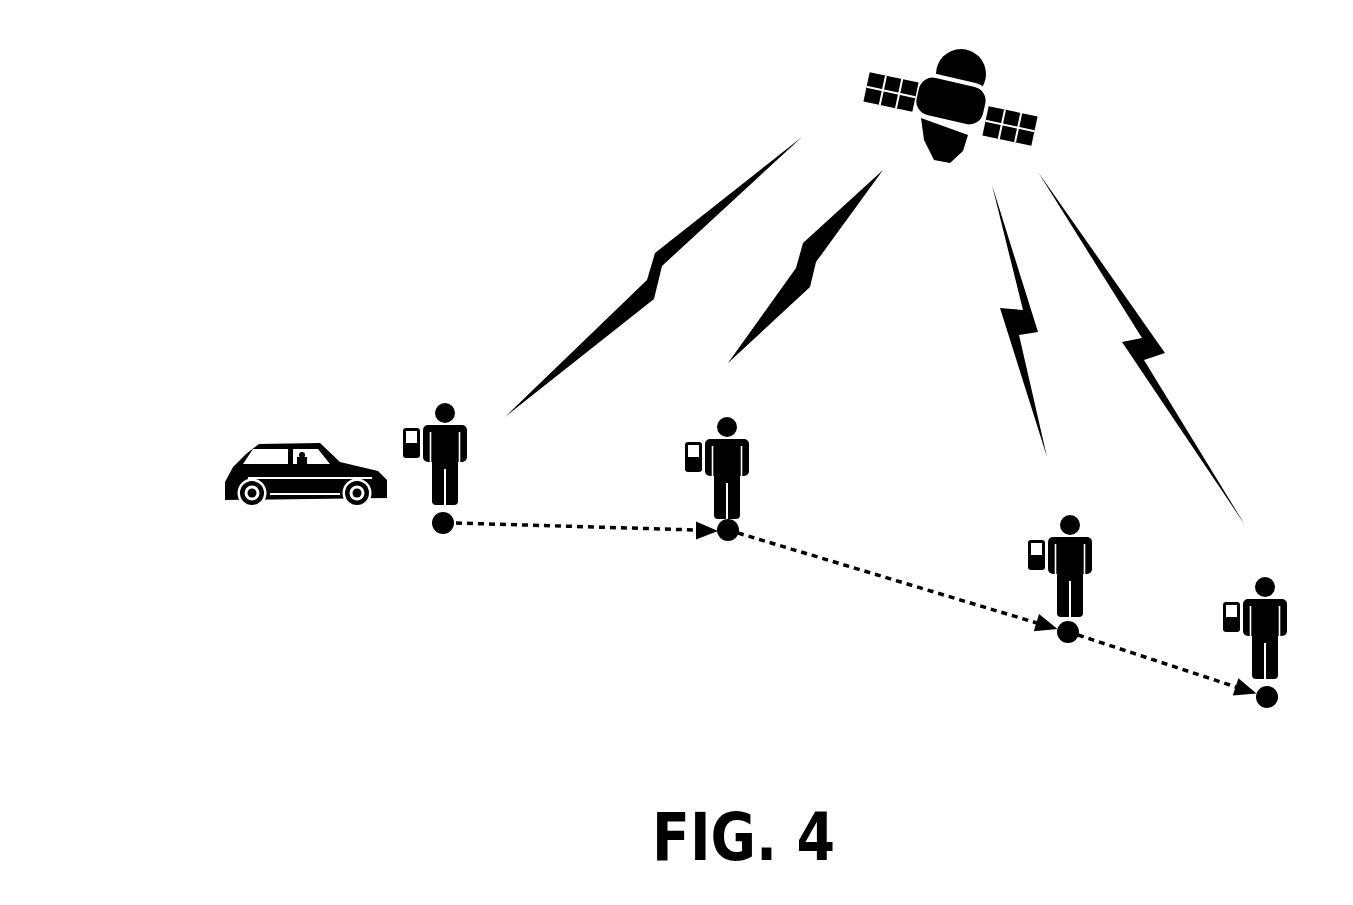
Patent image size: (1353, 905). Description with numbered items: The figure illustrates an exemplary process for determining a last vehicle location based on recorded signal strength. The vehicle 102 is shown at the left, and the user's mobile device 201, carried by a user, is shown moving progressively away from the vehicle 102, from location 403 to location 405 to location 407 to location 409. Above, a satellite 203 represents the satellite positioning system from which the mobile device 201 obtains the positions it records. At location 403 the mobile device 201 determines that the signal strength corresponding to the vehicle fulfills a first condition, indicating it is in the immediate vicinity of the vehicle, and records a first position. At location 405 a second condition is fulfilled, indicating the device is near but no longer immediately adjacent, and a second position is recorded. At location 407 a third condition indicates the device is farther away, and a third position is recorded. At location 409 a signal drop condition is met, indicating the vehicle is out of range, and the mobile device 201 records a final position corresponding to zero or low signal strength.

The vehicle 102 is at (257, 447).
The mobile device 201 is at (410, 425).
The satellite 203 is at (877, 75).
The location 403 is at (437, 533).
The location 405 is at (728, 542).
The location 407 is at (1067, 643).
The location 409 is at (1263, 708).